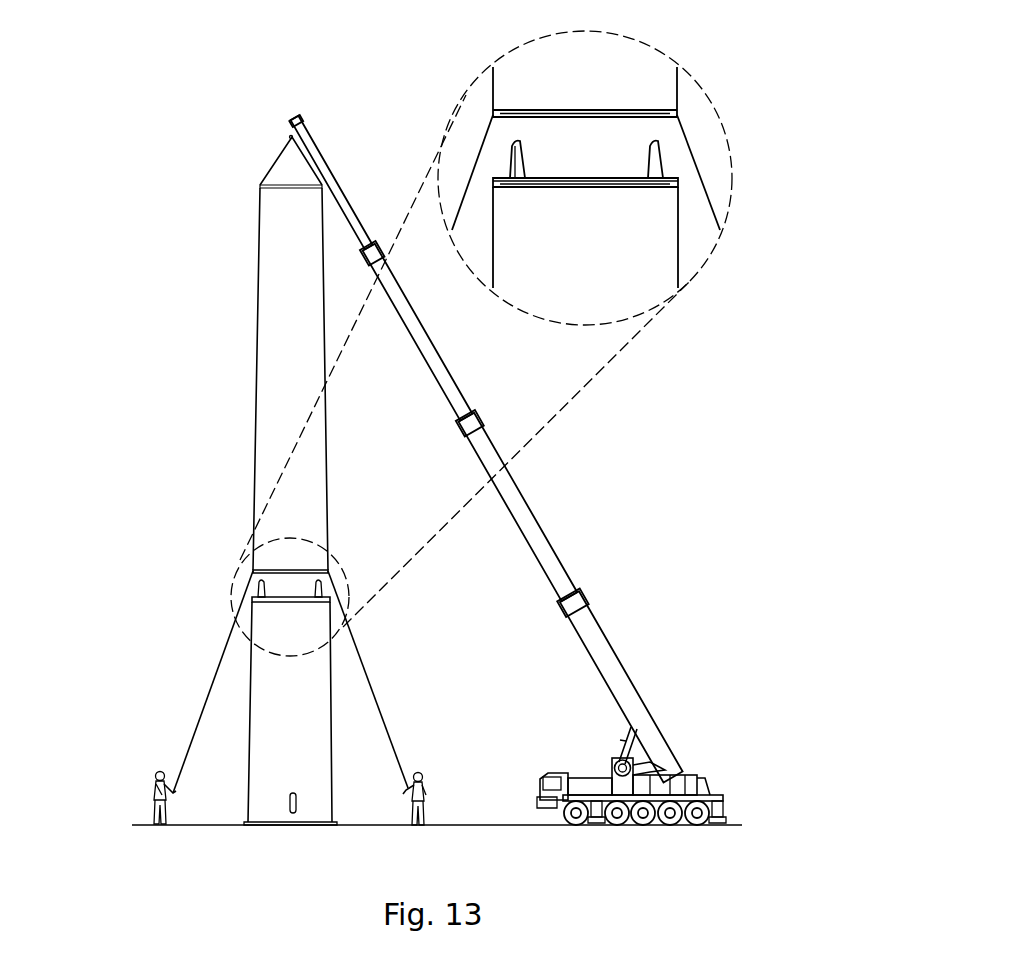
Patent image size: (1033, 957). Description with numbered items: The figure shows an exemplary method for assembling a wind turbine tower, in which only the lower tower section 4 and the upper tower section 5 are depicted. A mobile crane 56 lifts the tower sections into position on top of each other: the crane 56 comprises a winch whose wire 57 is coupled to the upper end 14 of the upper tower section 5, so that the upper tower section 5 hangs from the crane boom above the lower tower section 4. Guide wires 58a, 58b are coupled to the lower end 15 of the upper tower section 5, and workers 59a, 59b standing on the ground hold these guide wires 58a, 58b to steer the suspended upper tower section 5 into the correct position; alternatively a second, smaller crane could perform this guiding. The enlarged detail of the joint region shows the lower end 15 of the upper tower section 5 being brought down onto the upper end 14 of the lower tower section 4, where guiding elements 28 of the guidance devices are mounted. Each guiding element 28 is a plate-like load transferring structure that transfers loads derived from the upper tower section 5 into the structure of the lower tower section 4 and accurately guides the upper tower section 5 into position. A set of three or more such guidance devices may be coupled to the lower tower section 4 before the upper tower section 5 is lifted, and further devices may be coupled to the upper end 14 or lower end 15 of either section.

The lower tower section 4 is at (303, 742).
The upper tower section 5 is at (299, 308).
The upper end 14 is at (675, 177).
The lower end 15 is at (667, 118).
The guiding element 28 is at (524, 162).
The crane 56 is at (687, 756).
The wire 57 is at (276, 162).
The guide wire 58a is at (198, 708).
The guide wire 58b is at (374, 688).
The worker 59a is at (147, 778).
The worker 59b is at (432, 788).